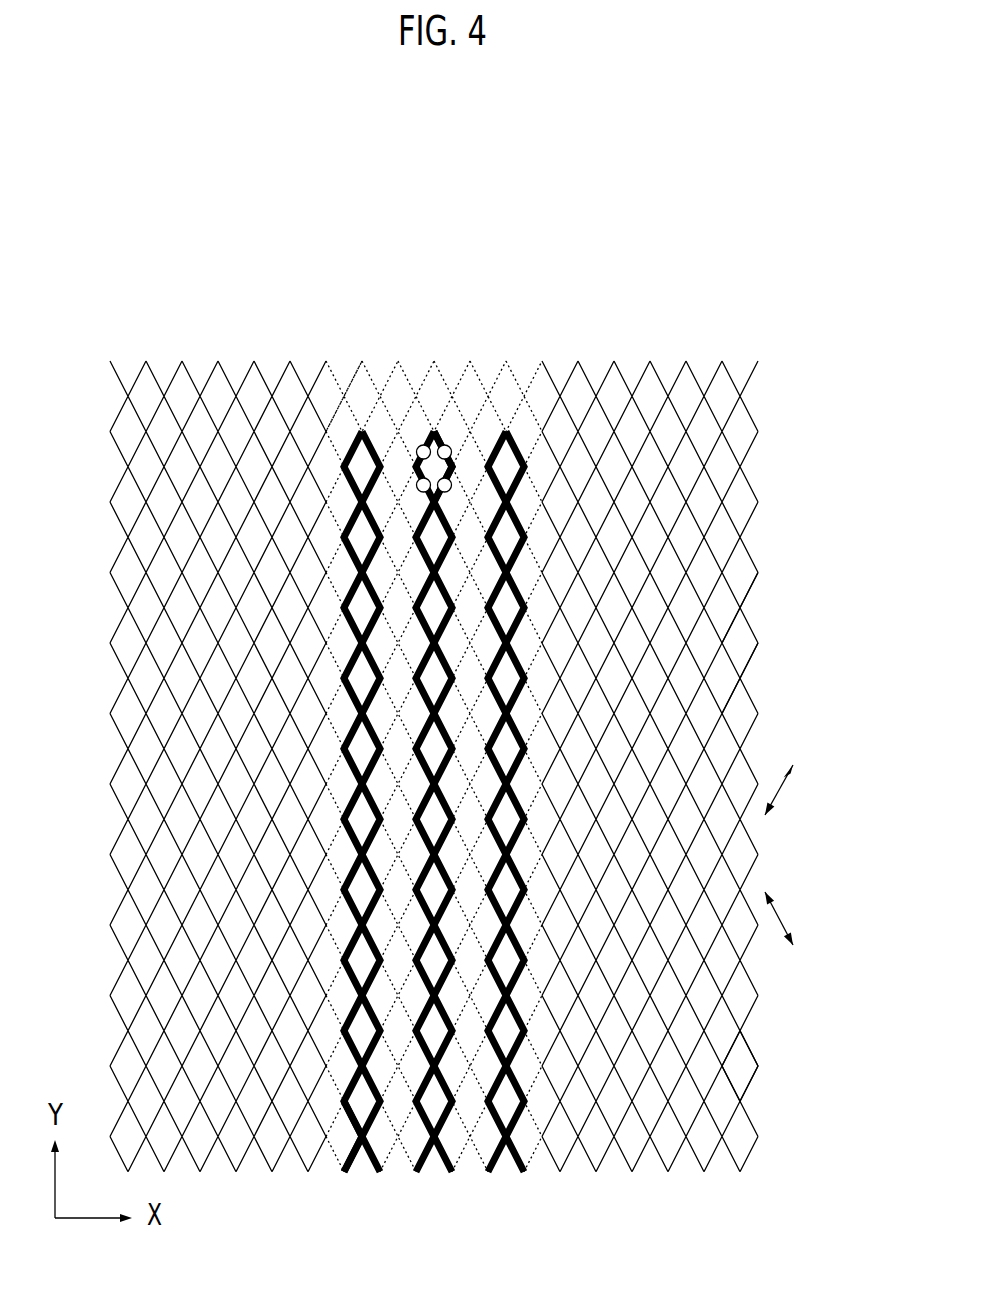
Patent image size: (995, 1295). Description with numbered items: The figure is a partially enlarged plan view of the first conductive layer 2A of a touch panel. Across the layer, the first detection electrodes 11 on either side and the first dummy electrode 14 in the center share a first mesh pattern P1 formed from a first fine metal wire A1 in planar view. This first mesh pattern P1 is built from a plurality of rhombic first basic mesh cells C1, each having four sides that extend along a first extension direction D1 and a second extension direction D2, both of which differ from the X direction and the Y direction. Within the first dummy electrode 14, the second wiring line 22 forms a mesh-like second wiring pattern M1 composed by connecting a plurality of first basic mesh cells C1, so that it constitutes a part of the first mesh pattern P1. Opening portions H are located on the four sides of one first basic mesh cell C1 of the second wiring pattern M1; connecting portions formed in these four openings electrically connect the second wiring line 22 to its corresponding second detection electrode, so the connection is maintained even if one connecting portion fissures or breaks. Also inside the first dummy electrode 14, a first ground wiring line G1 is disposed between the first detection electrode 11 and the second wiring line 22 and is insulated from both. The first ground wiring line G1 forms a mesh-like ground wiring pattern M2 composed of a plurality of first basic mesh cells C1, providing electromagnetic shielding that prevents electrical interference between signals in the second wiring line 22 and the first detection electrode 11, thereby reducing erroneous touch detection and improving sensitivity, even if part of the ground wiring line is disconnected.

The first conductive layer 2A is at (478, 750).
The first detection electrode 11 is at (326, 370).
The first dummy electrode 14 is at (326, 343).
The second wiring line 22 is at (442, 1162).
The first ground wiring line G1 is at (370, 1160).
The second wiring pattern M1 is at (457, 474).
The ground wiring pattern M2 is at (350, 1122).
The opening portion H is at (417, 446).
The first fine metal wire A1 is at (352, 373).
The first mesh pattern P1 is at (752, 698).
The first basic mesh cell C1 is at (738, 1058).
The first extension direction D1 is at (792, 791).
The second extension direction D2 is at (792, 914).